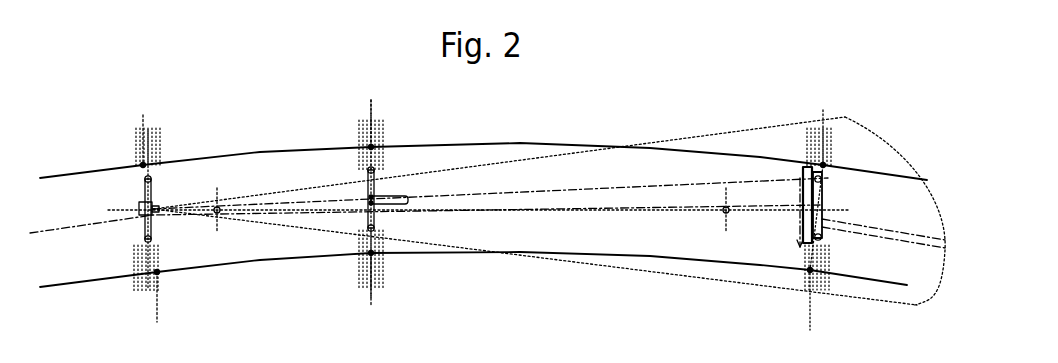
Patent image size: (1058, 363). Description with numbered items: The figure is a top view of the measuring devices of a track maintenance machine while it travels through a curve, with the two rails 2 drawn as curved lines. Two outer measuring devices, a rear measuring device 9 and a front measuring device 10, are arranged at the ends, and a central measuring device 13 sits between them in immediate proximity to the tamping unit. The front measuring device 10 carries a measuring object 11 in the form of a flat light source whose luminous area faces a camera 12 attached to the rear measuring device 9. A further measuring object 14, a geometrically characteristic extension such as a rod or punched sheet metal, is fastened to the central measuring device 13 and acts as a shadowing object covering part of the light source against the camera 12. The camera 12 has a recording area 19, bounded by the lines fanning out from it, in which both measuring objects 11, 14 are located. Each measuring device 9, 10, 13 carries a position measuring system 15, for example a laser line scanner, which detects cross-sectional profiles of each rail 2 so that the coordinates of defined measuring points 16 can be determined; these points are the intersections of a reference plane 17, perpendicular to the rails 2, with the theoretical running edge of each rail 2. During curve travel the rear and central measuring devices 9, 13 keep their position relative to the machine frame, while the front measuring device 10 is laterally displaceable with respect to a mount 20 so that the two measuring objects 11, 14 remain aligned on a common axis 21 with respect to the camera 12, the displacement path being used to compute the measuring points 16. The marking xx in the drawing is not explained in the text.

The rail 2 is at (262, 152).
The rear measuring device 9 is at (123, 239).
The front measuring device 10 is at (842, 232).
The measuring object 11 is at (803, 190).
The camera 12 is at (160, 206).
The central measuring device 13 is at (403, 187).
The further measuring object 14 is at (368, 200).
The position measuring system 15 is at (145, 180).
The measuring point 16 is at (143, 163).
The reference plane 17 is at (157, 306).
The recording area 19 is at (728, 284).
The mount 20 is at (830, 226).
The common axis 21 is at (660, 188).
The section line xx is at (220, 207).